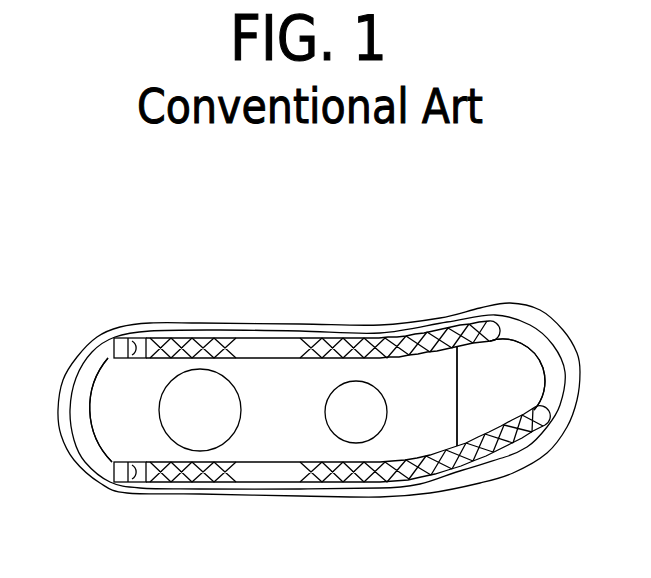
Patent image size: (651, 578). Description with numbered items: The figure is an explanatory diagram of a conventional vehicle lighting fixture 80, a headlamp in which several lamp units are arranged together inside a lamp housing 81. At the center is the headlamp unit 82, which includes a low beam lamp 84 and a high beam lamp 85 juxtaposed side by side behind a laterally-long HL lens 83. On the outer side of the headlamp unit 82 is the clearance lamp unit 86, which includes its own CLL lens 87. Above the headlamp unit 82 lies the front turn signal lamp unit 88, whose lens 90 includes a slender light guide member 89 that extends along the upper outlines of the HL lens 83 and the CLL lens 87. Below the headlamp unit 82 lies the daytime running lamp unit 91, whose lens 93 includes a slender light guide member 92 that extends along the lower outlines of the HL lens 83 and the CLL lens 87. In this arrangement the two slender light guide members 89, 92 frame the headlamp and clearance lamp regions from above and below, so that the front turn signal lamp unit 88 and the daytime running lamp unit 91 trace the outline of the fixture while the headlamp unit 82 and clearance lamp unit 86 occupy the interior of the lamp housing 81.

The vehicle lighting fixture 80 is at (183, 290).
The lamp housing 81 is at (202, 497).
The headlamp unit 82 is at (85, 427).
The HL lens 83 is at (96, 381).
The low beam lamp 84 is at (183, 433).
The high beam lamp 85 is at (367, 430).
The clearance lamp unit 86 is at (540, 336).
The CLL lens 87 is at (548, 392).
The front turn signal lamp unit 88 is at (258, 334).
The light guide member 89 is at (440, 341).
The lens 90 is at (350, 341).
The daytime running lamp unit 91 is at (258, 490).
The light guide member 92 is at (440, 468).
The lens 93 is at (320, 481).